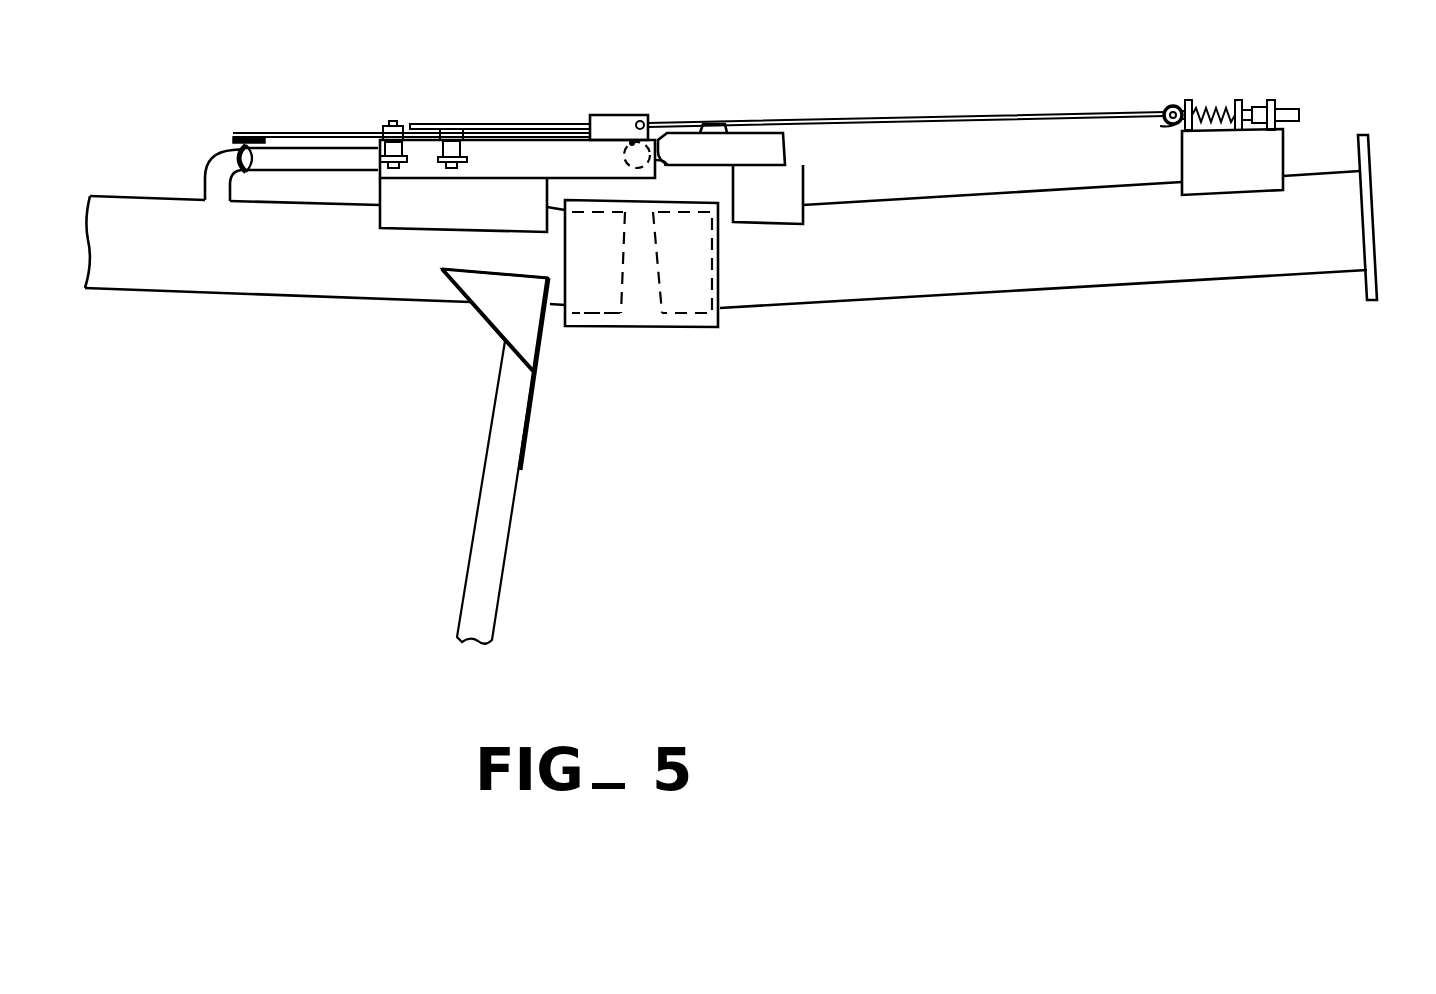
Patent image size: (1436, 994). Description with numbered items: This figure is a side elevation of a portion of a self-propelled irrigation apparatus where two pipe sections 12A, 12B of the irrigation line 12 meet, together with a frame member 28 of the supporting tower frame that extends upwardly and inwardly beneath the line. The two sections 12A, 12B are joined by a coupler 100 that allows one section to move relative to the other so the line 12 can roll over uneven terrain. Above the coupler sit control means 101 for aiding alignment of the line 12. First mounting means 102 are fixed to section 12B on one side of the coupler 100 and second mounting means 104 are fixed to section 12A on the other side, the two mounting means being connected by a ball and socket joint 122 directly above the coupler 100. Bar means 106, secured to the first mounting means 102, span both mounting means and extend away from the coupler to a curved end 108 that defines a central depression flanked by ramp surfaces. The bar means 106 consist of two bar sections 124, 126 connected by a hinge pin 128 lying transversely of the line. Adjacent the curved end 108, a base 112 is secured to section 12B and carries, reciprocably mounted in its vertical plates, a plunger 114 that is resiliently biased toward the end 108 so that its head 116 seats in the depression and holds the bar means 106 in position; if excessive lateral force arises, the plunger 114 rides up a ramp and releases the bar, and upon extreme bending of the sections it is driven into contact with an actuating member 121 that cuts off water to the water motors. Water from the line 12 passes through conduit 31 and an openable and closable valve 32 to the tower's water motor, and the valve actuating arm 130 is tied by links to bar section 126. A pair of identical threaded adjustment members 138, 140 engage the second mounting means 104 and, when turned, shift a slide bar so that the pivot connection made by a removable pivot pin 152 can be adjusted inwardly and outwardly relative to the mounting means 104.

The irrigation line 12 is at (731, 274).
The pipe section 12A is at (367, 285).
The pipe section 12B is at (890, 282).
The frame member 28 is at (485, 525).
The conduit 31 is at (305, 143).
The valve 32 is at (240, 158).
The coupler 100 is at (637, 328).
The control means 101 is at (723, 101).
The first mounting means 102 is at (803, 164).
The second mounting means 104 is at (378, 230).
The bar means 106 is at (906, 82).
The curved end 108 is at (1171, 106).
The base 112 is at (1230, 185).
The plunger 114 is at (1192, 108).
The head 116 is at (1175, 128).
The actuating member 121 is at (1263, 100).
The ball and socket joint 122 is at (657, 132).
The bar section 124 is at (982, 114).
The bar section 126 is at (513, 128).
The hinge pin 128 is at (638, 118).
The valve actuating arm 130 is at (232, 142).
The adjustment member 138 is at (378, 165).
The adjustment member 140 is at (457, 164).
The removable pivot pin 152 is at (390, 121).